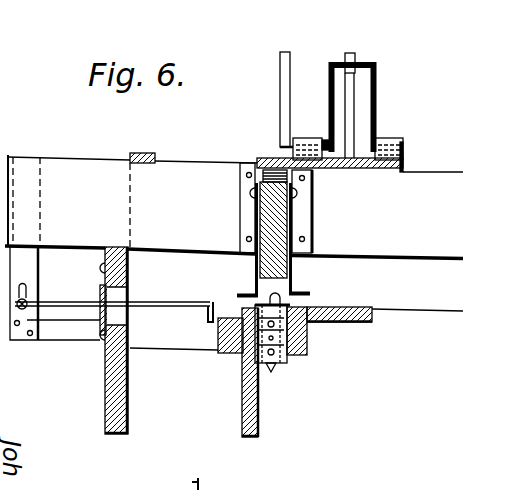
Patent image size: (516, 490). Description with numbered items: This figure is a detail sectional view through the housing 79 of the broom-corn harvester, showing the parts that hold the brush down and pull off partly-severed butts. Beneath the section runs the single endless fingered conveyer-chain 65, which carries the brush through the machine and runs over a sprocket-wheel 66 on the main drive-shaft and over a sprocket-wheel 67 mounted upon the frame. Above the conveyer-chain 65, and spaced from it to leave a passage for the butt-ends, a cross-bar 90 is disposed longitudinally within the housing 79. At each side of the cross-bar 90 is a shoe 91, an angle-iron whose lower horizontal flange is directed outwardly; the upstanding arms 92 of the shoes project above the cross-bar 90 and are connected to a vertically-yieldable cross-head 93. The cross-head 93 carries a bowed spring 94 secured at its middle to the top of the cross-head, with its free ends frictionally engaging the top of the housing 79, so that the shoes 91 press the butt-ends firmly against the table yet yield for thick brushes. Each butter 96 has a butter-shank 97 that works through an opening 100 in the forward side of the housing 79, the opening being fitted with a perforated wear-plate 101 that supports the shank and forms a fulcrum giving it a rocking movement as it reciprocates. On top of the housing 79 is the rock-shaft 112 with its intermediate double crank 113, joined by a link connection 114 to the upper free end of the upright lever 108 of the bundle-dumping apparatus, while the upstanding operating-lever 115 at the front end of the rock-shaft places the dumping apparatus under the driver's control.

The fingered conveyer-chain 65 is at (276, 304).
The sprocket-wheel 66 is at (272, 368).
The sprocket-wheel 67 is at (282, 363).
The housing 79 is at (234, 251).
The cross-bar 90 is at (275, 258).
The shoe 91 is at (250, 293).
The upstanding arm 92 is at (312, 227).
The cross-head 93 is at (312, 189).
The bowed spring 94 is at (268, 157).
The butter 96 is at (203, 322).
The butter-shank 97 is at (132, 307).
The opening 100 is at (118, 319).
The wear-plate 101 is at (100, 327).
The upright lever 108 is at (345, 110).
The rock-shaft 112 is at (292, 137).
The double crank 113 is at (382, 80).
The link connection 114 is at (354, 62).
The operating-lever 115 is at (279, 98).